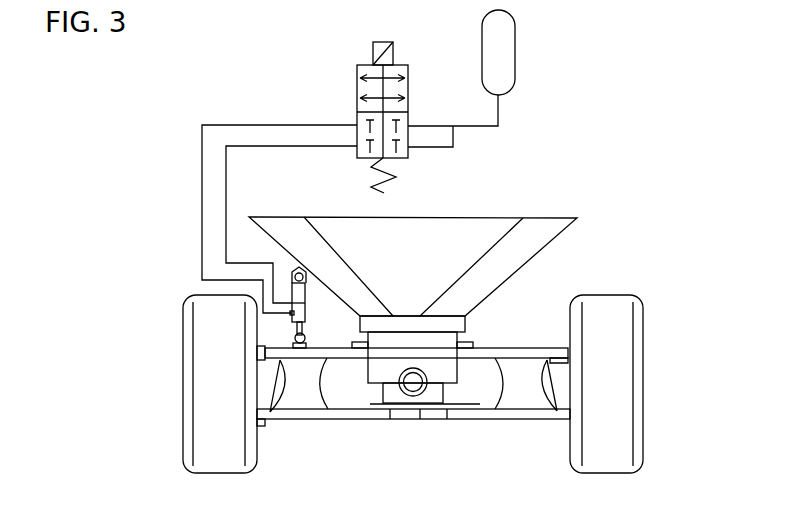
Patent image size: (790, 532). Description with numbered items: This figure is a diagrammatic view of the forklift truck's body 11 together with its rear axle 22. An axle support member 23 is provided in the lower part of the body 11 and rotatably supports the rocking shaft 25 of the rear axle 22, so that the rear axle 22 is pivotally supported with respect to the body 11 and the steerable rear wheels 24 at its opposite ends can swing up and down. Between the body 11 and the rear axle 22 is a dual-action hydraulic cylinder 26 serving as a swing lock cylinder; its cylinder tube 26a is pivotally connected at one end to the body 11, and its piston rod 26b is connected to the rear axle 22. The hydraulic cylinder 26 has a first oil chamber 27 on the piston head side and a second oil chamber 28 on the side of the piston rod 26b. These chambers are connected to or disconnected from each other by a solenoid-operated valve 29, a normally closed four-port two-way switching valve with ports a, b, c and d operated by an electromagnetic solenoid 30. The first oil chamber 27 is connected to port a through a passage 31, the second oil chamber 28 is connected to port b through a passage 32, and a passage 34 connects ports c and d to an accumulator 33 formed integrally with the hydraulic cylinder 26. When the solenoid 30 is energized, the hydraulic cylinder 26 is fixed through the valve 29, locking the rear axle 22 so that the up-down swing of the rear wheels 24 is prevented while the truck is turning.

The body 11 is at (548, 217).
The rear axle 22 is at (495, 445).
The axle support member 23 is at (457, 333).
The rear wheels 24 is at (190, 393).
The rocking shaft 25 is at (401, 391).
The hydraulic cylinder 26 is at (305, 316).
The cylinder tube 26a is at (307, 299).
The piston rod 26b is at (306, 347).
The first oil chamber 27 is at (306, 306).
The second oil chamber 28 is at (292, 323).
The solenoid-operated valve 29 is at (400, 63).
The electromagnetic solenoid 30 is at (372, 62).
The passage 31 is at (226, 186).
The passage 32 is at (202, 186).
The accumulator 33 is at (516, 56).
The passage 34 is at (473, 127).